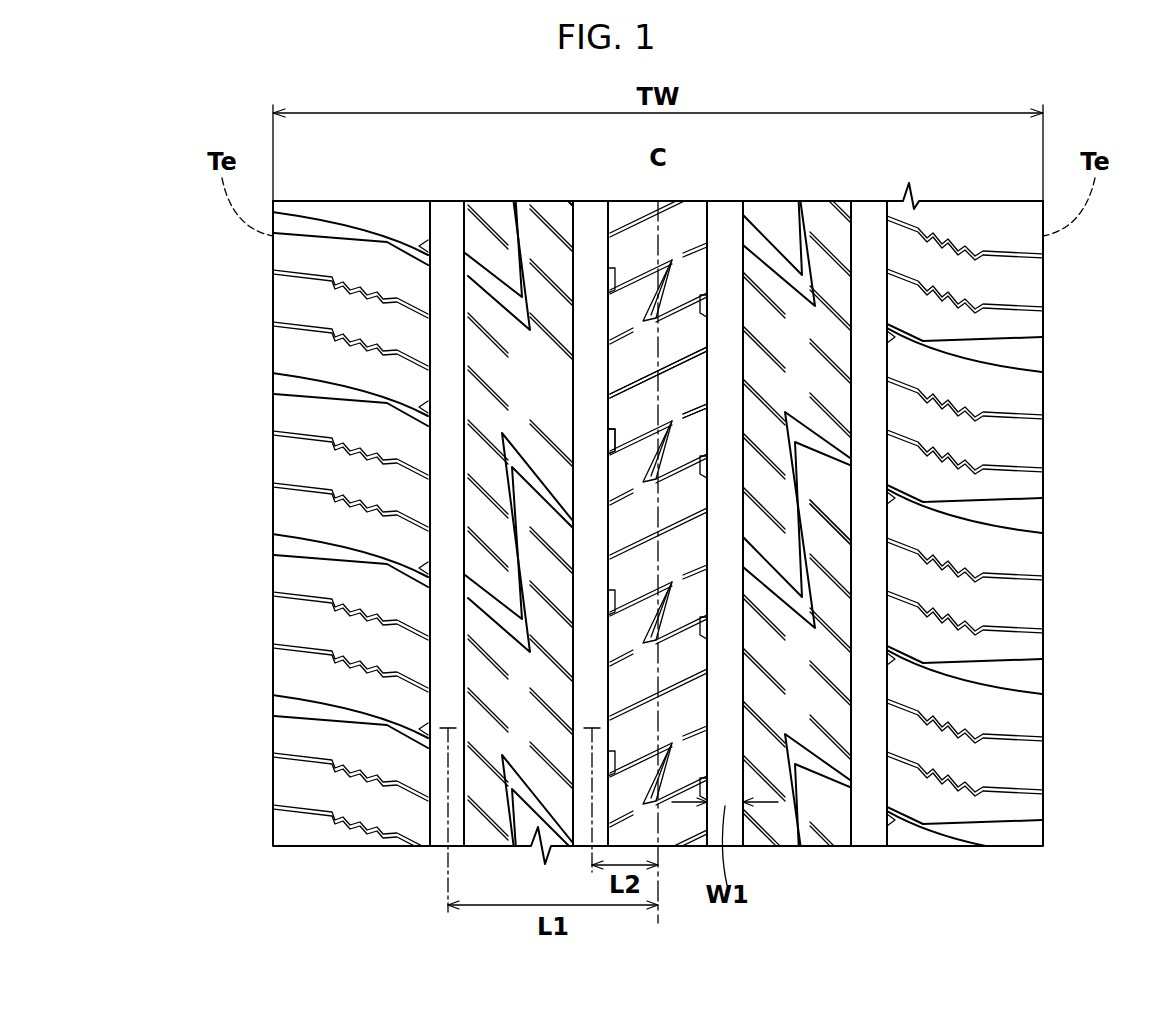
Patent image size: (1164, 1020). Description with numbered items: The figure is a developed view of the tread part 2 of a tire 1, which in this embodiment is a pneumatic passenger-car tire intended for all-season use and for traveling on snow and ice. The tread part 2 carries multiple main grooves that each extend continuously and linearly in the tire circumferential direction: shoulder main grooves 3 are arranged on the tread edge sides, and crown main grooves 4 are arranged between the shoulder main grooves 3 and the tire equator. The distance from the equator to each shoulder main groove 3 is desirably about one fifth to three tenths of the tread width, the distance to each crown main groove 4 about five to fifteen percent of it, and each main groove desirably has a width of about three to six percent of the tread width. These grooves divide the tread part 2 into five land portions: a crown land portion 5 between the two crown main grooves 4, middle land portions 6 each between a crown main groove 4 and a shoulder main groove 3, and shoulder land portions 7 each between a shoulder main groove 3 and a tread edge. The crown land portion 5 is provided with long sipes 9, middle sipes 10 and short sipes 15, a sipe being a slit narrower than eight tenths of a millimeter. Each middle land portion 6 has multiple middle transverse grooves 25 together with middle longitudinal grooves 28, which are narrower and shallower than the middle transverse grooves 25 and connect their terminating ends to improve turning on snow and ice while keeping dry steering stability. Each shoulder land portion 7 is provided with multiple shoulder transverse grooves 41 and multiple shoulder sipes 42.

The tire 1 is at (820, 198).
The tread part 2 is at (625, 198).
The shoulder main grooves 3 is at (445, 243).
The crown main grooves 4 is at (592, 238).
The crown land portion 5 is at (677, 243).
The middle land portions 6 is at (492, 255).
The shoulder land portions 7 is at (362, 270).
The long sipes 9 is at (677, 365).
The middle sipes 10 is at (612, 442).
The short sipes 15 is at (687, 407).
The middle transverse grooves 25 is at (548, 487).
The middle longitudinal grooves 28 is at (805, 540).
The shoulder transverse grooves 41 is at (342, 388).
The shoulder sipes 42 is at (352, 333).